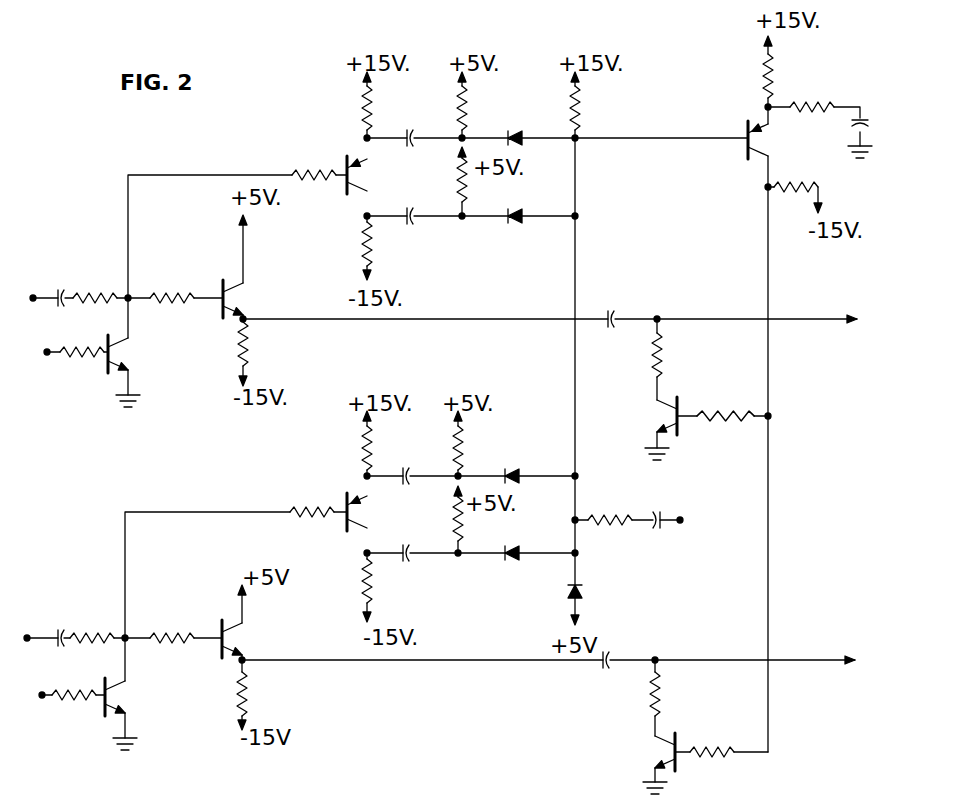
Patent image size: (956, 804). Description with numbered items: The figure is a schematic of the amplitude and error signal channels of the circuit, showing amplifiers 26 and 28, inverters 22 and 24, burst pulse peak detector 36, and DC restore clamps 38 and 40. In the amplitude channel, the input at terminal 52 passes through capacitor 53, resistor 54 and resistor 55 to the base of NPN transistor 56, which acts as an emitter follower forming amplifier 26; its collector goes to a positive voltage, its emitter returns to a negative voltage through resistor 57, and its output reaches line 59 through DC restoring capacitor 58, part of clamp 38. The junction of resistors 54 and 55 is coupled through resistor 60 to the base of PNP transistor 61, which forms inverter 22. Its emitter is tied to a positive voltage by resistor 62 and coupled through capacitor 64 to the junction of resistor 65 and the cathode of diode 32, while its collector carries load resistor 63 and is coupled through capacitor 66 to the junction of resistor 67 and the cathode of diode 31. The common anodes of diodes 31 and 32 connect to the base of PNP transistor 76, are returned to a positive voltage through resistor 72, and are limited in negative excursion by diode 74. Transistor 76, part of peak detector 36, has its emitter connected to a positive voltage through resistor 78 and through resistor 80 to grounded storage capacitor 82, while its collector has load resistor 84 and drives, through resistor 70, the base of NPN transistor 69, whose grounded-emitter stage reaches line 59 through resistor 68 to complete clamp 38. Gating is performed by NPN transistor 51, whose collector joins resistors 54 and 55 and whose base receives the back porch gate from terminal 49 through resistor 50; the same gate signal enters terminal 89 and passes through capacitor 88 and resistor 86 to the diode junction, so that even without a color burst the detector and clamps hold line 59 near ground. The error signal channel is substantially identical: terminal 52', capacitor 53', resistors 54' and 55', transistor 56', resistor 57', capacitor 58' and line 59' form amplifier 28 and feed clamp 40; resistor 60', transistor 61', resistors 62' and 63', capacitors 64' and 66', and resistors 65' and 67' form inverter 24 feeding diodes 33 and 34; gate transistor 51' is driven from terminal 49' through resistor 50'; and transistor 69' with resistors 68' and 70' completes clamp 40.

The inverter 22 is at (349, 225).
The inverter 24 is at (348, 550).
The amplifier 26 is at (277, 310).
The amplifier 28 is at (279, 639).
The diode 31 is at (510, 226).
The diode 32 is at (514, 130).
The diode 33 is at (509, 562).
The diode 34 is at (510, 470).
The burst pulse peak detector 36 is at (832, 57).
The DC restore clamp 38 is at (717, 364).
The DC restore clamp 40 is at (710, 692).
The terminal 49 is at (31, 366).
The resistor 50 is at (73, 374).
The NPN transistor 51 is at (102, 371).
The terminal 52 is at (22, 282).
The capacitor 53 is at (69, 276).
The resistor 54 is at (97, 281).
The resistor 55 is at (172, 281).
The NPN transistor 56 is at (221, 289).
The resistor 57 is at (264, 354).
The DC restoring capacitor 58 is at (630, 305).
The output line 59 is at (819, 301).
The resistor 60 is at (309, 160).
The PNP transistor 61 is at (348, 161).
The resistor 62 is at (351, 108).
The load resistor 63 is at (347, 244).
The capacitor 64 is at (421, 118).
The resistor 65 is at (486, 99).
The capacitor 66 is at (409, 233).
The resistor 67 is at (443, 180).
The resistor 68 is at (632, 356).
The NPN transistor 69 is at (683, 432).
The resistor 70 is at (725, 398).
The resistor 72 is at (584, 106).
The diode 74 is at (582, 592).
The PNP transistor 76 is at (743, 148).
The resistor 78 is at (762, 57).
The resistor 80 is at (820, 90).
The storage capacitor 82 is at (876, 125).
The load resistor 84 is at (799, 190).
The resistor 86 is at (604, 515).
The capacitor 88 is at (662, 512).
The terminal 89 is at (684, 522).
The bias input terminal 49' is at (26, 708).
The resistor 50' is at (66, 713).
The transistor 51' is at (98, 709).
The signal input terminal 52' is at (27, 623).
The capacitor 53' is at (64, 618).
The resistor 54' is at (96, 623).
The resistor 55' is at (178, 623).
The transistor 56' is at (212, 648).
The resistor 57' is at (269, 694).
The capacitor 58' is at (627, 646).
The output line 59' is at (819, 644).
The resistor 60' is at (308, 496).
The transistor 61' is at (342, 496).
The resistor 62' is at (342, 448).
The resistor 63' is at (347, 581).
The capacitor 64' is at (421, 458).
The resistor 65' is at (482, 440).
The capacitor 66' is at (412, 570).
The resistor 67' is at (438, 519).
The resistor 68' is at (634, 694).
The transistor 69' is at (687, 767).
The resistor 70' is at (725, 764).